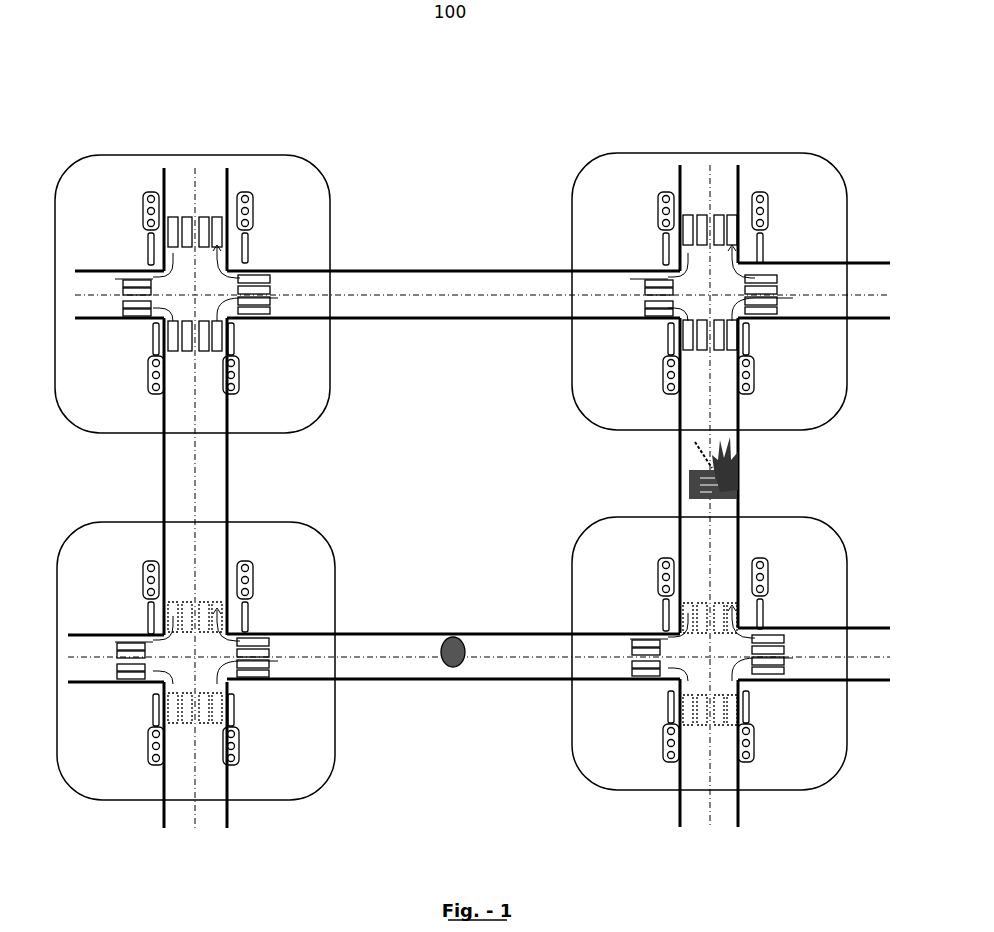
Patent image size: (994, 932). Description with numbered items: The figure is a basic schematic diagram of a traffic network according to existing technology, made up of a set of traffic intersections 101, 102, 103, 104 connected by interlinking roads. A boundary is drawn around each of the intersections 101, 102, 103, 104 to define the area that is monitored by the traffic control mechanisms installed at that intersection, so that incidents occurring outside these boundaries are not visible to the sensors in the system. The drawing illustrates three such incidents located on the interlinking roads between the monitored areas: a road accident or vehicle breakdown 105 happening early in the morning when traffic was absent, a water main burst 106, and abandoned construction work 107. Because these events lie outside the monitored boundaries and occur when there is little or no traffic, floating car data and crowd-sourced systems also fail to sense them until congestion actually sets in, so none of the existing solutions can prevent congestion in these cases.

The first intersection 101 is at (192, 273).
The second intersection 102 is at (709, 271).
The third intersection 103 is at (196, 639).
The fourth intersection 104 is at (709, 631).
The road accident or vehicle breakdown 105 is at (166, 472).
The water main burst 106 is at (690, 472).
The abandoned construction work 107 is at (452, 632).